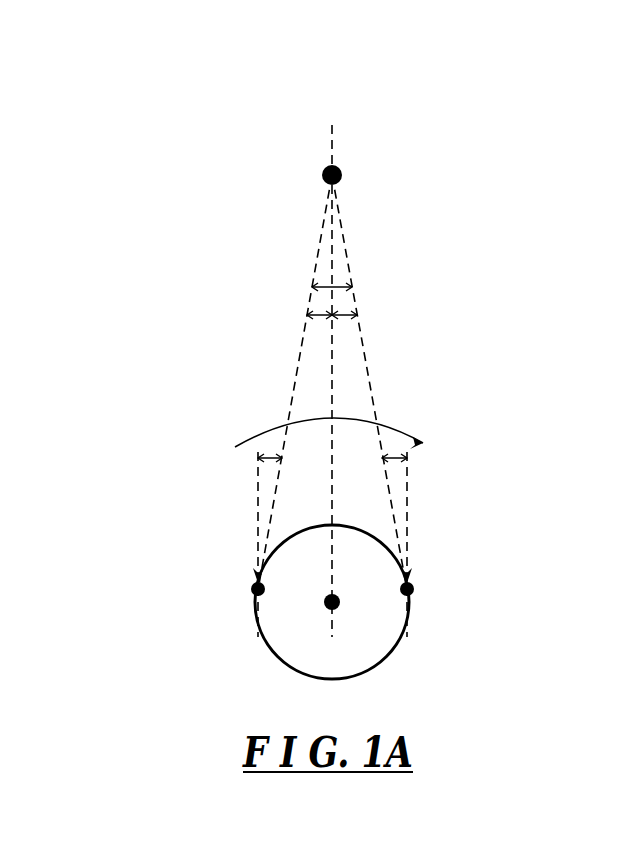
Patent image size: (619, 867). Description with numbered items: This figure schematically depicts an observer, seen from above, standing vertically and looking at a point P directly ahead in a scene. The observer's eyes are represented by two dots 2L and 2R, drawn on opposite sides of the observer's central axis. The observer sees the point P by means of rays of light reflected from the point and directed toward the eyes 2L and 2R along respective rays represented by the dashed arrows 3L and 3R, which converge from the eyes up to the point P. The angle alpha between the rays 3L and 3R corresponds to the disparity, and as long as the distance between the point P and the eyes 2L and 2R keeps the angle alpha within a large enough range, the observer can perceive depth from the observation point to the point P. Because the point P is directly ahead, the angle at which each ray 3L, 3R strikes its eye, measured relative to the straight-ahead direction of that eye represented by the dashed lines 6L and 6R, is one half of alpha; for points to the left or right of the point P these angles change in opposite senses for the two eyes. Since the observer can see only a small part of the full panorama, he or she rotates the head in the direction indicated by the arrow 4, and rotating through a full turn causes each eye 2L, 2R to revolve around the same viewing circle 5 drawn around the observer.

The point P is at (342, 175).
The left eye 2L is at (246, 588).
The right eye 2R is at (414, 590).
The ray 3L is at (300, 349).
The ray 3R is at (366, 353).
The arrow 4 is at (390, 426).
The viewing circle 5 is at (401, 632).
The dashed line 6L is at (257, 526).
The dashed line 6R is at (409, 527).
The angle alpha is at (337, 284).